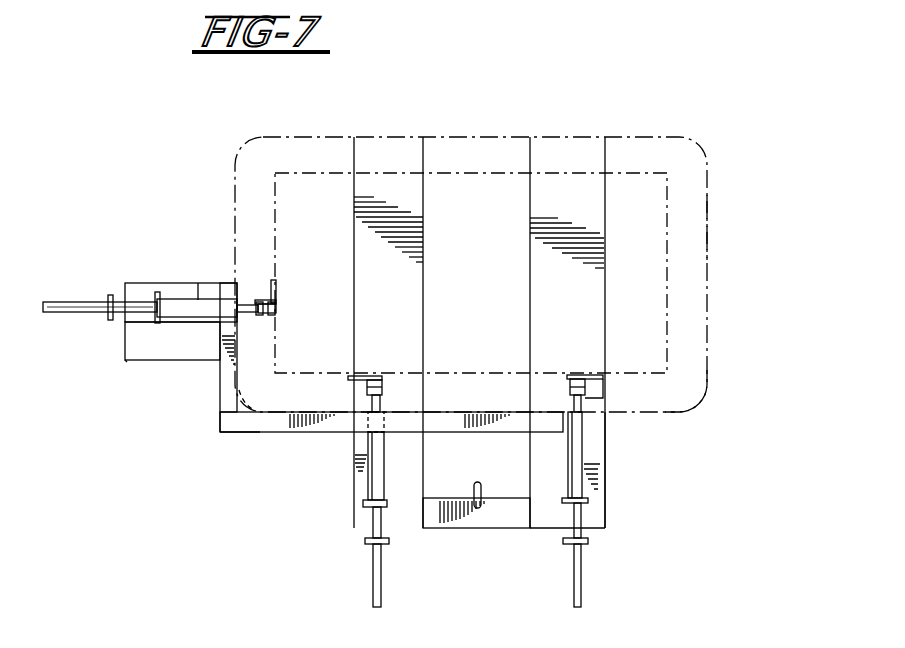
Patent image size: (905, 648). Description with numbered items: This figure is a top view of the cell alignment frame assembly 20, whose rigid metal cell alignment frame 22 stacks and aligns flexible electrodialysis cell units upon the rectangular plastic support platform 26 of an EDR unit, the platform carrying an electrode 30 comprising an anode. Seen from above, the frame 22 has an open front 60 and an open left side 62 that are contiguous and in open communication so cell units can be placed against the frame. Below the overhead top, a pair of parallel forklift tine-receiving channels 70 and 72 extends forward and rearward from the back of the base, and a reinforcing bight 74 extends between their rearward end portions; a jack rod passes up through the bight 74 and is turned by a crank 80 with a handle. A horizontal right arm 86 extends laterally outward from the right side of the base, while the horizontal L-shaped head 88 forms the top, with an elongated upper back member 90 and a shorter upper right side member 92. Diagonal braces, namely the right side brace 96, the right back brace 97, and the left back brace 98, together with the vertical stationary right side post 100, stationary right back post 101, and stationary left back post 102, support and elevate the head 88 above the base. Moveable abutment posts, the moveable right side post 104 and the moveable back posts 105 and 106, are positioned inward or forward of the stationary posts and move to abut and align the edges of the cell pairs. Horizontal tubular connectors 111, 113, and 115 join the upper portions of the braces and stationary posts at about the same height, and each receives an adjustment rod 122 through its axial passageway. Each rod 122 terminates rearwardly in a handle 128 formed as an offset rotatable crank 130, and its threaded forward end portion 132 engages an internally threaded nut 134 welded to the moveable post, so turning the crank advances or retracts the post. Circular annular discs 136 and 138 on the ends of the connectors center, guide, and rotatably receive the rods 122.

The cell alignment frame assembly 20 is at (614, 428).
The cell alignment frame 22 is at (222, 370).
The support platform 26 is at (714, 398).
The electrode 30 is at (668, 280).
The open front 60 is at (490, 134).
The open left side 62 is at (722, 230).
The forklift tine-receiving channel 70 is at (605, 528).
The forklift tine-receiving channel 72 is at (400, 533).
The bight 74 is at (452, 498).
The crank 80 is at (484, 490).
The right arm 86 is at (127, 362).
The L-shaped head 88 is at (222, 433).
The upper back member 90 is at (296, 433).
The upper right side member 92 is at (218, 425).
The right side brace 96 is at (133, 332).
The right back brace 97 is at (386, 513).
The left back brace 98 is at (558, 513).
The stationary right side post 100 is at (236, 338).
The stationary right back post 101 is at (385, 441).
The stationary left back post 102 is at (566, 440).
The moveable right side post 104 is at (280, 296).
The moveable right back post 105 is at (360, 376).
The moveable left back post 106 is at (597, 375).
The upper right side connector 111 is at (193, 300).
The upper right back connector 113 is at (368, 482).
The upper left back connector 115 is at (585, 462).
The adjustment rod 122 is at (585, 406).
The handle 128 is at (62, 302).
The rotatable crank 130 is at (585, 590).
The threaded forward end portion 132 is at (258, 292).
The nut 134 is at (277, 313).
The annular disc 136 is at (366, 541).
The annular disc 138 is at (590, 500).